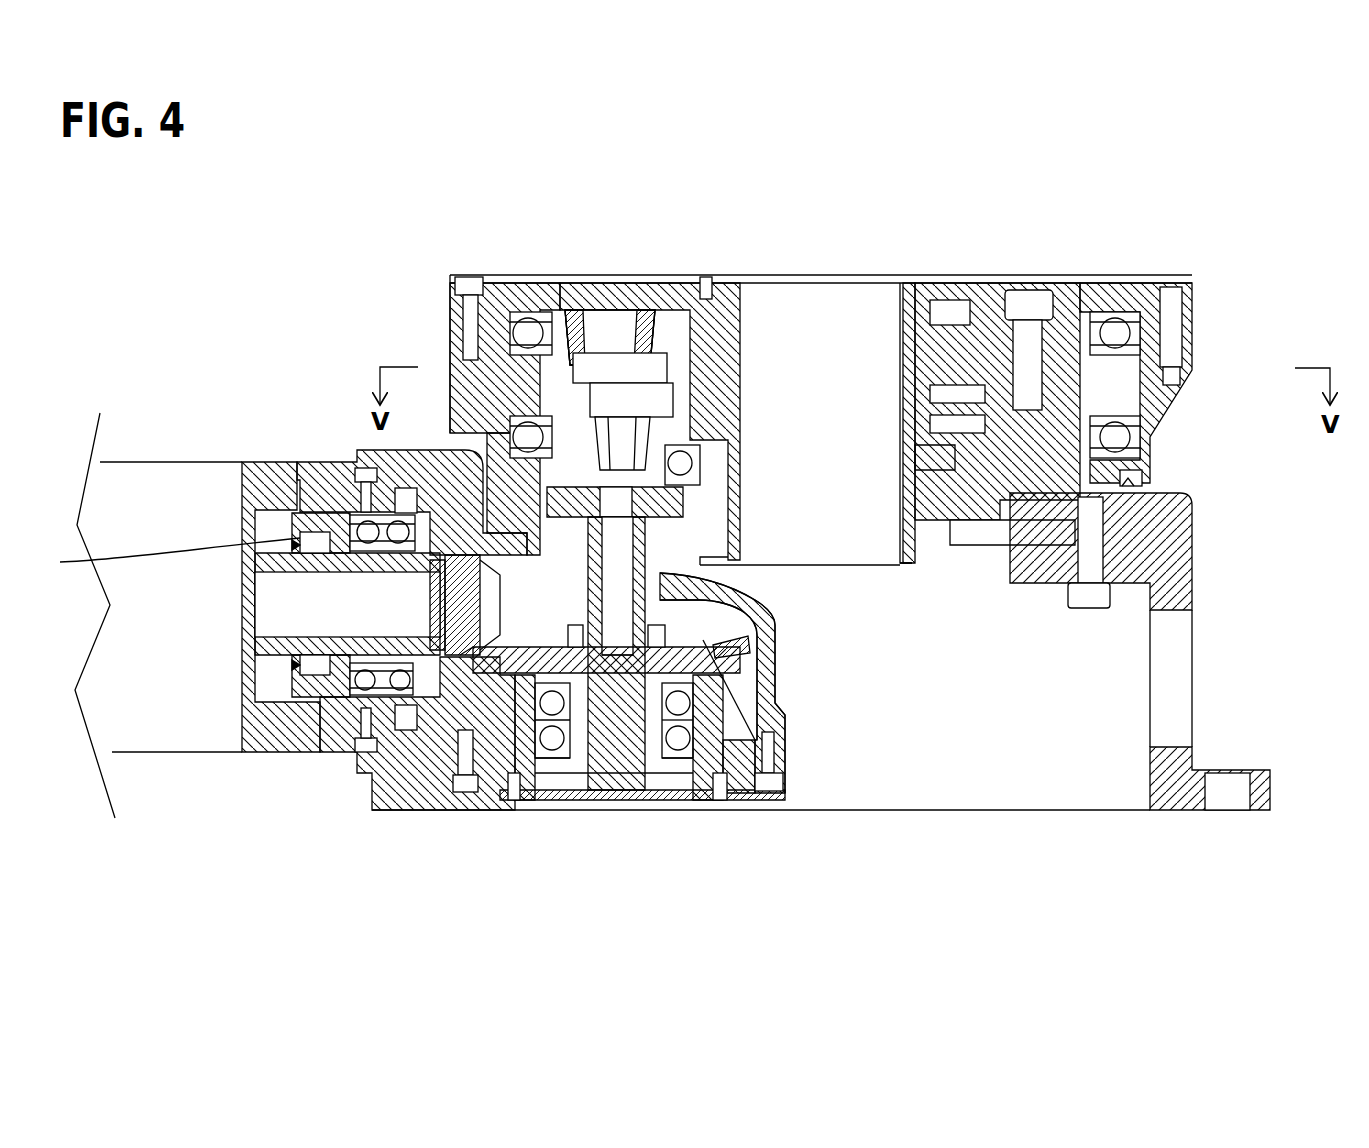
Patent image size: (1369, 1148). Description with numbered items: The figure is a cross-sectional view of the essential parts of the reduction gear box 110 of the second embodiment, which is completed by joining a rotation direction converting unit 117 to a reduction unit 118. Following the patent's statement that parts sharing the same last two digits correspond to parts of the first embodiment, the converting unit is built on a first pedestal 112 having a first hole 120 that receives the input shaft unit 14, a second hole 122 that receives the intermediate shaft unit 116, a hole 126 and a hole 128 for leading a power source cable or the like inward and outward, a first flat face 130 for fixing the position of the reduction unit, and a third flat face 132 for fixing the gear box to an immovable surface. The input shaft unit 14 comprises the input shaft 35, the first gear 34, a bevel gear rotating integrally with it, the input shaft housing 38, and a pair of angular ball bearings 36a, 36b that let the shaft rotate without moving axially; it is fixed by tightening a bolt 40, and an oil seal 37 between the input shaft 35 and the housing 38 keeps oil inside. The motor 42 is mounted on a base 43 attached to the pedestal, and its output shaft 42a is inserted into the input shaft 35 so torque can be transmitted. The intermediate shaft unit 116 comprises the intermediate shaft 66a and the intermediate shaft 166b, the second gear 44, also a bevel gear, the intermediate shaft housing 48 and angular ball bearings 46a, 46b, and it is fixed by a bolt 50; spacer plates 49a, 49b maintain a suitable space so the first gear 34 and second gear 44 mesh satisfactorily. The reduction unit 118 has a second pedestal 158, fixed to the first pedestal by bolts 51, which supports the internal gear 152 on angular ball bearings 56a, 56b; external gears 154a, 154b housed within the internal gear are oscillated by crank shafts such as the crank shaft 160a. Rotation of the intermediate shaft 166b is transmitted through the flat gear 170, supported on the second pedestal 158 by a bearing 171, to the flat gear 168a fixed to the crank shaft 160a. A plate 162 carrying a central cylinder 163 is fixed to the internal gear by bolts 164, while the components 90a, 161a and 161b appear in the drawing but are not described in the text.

The reduction gear box 110 is at (1147, 182).
The input shaft unit 14 is at (312, 446).
The first gear 34 is at (520, 795).
The input shaft 35 is at (332, 696).
The angular ball bearing 36a is at (366, 700).
The angular ball bearing 36b is at (428, 700).
The oil seal 37 is at (165, 559).
The input shaft housing 38 is at (400, 732).
The bolt 40 is at (340, 468).
The motor 42 is at (195, 478).
The output shaft 42a is at (290, 640).
The base 43 is at (264, 470).
The second gear 44 is at (735, 668).
The angular ball bearing 46a is at (700, 708).
The angular ball bearing 46b is at (700, 762).
The intermediate shaft housing 48 is at (787, 784).
The spacer plate 49a is at (368, 466).
The spacer plate 49b is at (785, 758).
The bolt 50 is at (774, 745).
The bolt 51 is at (1088, 602).
The angular ball bearing 56a is at (1116, 335).
The angular ball bearing 56b is at (1122, 440).
The intermediate shaft 66a is at (650, 800).
The seal member 90a is at (707, 290).
The first pedestal 112 is at (1165, 570).
The intermediate shaft unit 116 is at (578, 840).
The rotation direction converting unit 117 is at (1181, 678).
The reduction unit 118 is at (1217, 332).
The first hole 120 is at (428, 470).
The second hole 122 is at (742, 636).
The hole 126 is at (1170, 670).
The hole 128 is at (885, 580).
The first flat face 130 is at (1140, 485).
The third flat face 132 is at (1180, 812).
The internal gear 152 is at (1160, 418).
The external gear 154a is at (540, 325).
The external gear 154b is at (525, 420).
The second pedestal 158 is at (995, 360).
The crank shaft 160a is at (612, 345).
The rotor core 161a is at (640, 352).
The rotor hub 161b is at (640, 405).
The plate 162 is at (1172, 322).
The cylinder 163 is at (746, 372).
The bolt 164 is at (472, 288).
The intermediate shaft 166b is at (645, 577).
The flat gear 168a is at (545, 390).
The flat gear 170 is at (700, 463).
The bearing 171 is at (930, 462).